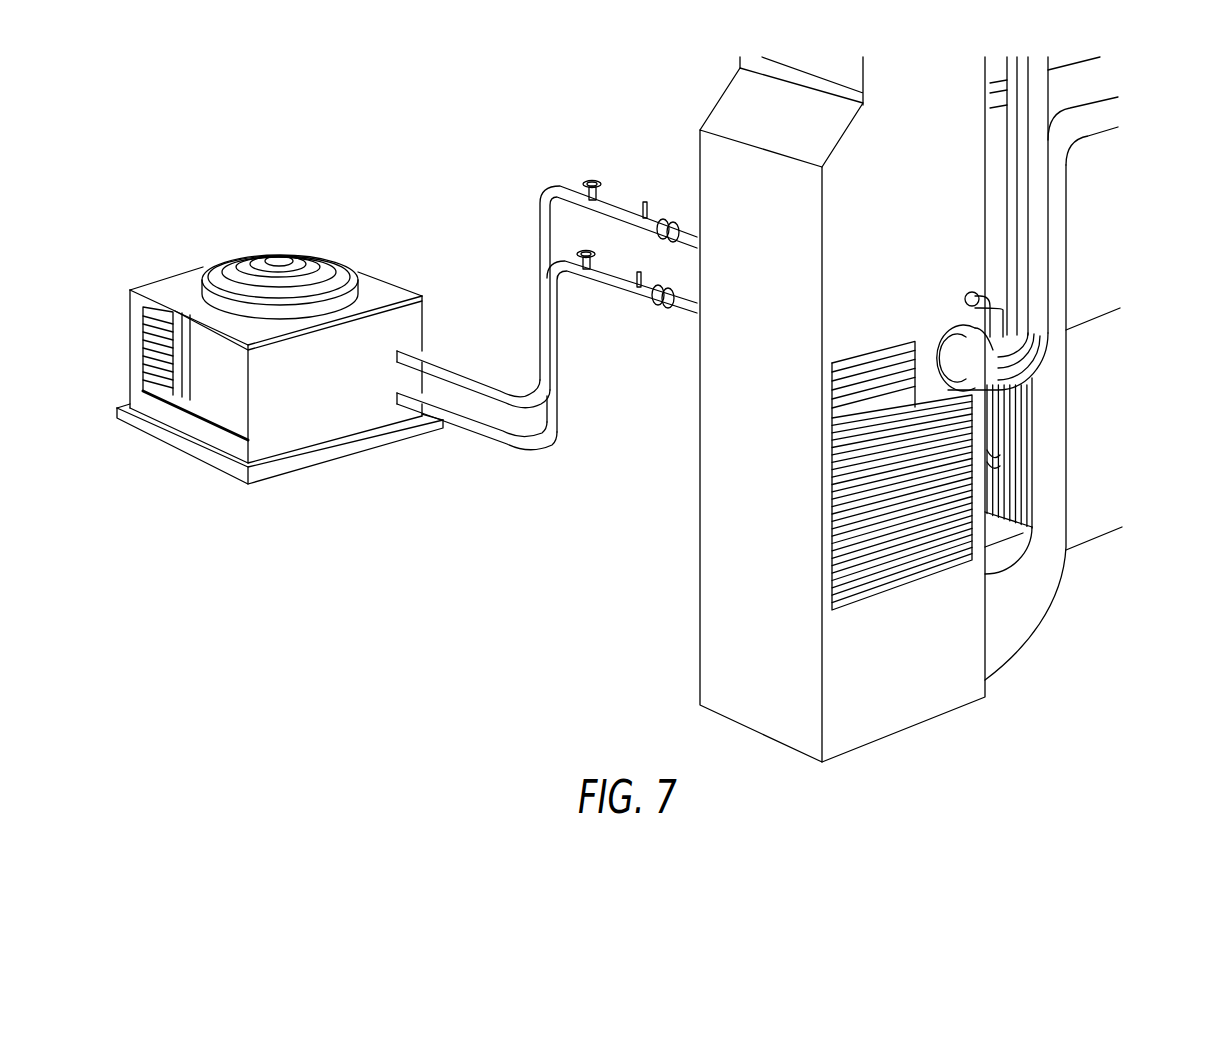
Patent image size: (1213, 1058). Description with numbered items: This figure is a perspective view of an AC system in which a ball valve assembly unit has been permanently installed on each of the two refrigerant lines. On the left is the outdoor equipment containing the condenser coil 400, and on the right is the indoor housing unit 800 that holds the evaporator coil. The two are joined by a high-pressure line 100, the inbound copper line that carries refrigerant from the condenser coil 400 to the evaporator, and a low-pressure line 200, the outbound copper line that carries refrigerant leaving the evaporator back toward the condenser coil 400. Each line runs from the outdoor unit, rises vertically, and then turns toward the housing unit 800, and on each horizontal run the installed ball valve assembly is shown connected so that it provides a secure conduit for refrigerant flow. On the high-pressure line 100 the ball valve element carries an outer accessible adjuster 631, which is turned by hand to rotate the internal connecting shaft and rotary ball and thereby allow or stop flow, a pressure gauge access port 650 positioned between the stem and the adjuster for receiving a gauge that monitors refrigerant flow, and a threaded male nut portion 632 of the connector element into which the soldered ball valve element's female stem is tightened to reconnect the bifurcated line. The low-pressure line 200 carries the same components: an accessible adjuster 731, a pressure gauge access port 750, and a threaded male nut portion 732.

The high-pressure line 100 is at (473, 434).
The low-pressure line 200 is at (470, 374).
The condenser coil 400 is at (302, 430).
The accessible adjuster 631 is at (584, 251).
The threaded male nut portion 632 is at (652, 297).
The pressure gauge access port 650 is at (614, 277).
The accessible adjuster 731 is at (589, 181).
The threaded male nut portion 732 is at (664, 221).
The pressure gauge access port 750 is at (628, 196).
The housing unit 800 is at (727, 453).